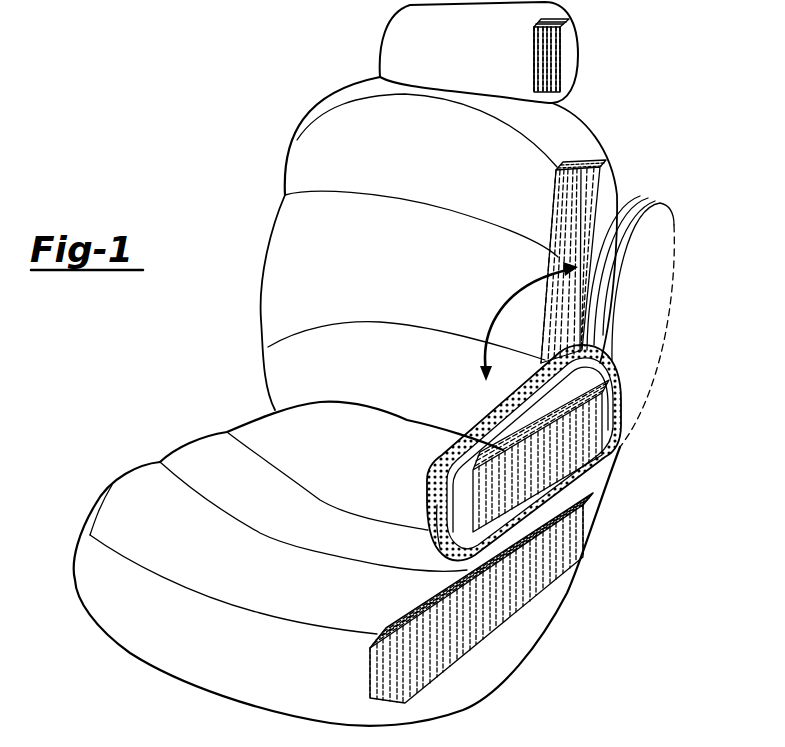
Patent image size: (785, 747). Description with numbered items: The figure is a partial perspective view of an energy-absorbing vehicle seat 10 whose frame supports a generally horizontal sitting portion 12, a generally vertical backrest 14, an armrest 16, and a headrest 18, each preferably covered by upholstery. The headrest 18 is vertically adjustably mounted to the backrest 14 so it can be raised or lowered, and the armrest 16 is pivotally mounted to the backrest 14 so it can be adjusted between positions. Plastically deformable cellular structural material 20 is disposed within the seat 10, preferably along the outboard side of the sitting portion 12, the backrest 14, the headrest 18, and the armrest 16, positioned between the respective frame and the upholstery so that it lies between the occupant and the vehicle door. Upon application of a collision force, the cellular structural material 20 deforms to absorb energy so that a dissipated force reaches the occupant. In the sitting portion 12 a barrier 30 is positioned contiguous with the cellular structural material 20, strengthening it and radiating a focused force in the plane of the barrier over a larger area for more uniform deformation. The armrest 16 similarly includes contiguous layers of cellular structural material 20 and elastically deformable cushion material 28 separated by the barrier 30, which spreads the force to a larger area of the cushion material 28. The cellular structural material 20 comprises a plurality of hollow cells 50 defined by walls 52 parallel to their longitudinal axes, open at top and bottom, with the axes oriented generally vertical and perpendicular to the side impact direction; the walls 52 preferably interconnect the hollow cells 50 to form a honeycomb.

The energy-absorbing vehicle seat 10 is at (147, 170).
The sitting portion 12 is at (151, 682).
The backrest 14 is at (252, 311).
The armrest 16 is at (684, 294).
The headrest 18 is at (370, 25).
The plastically deformable cellular structural material 20 is at (563, 42).
The elastically deformable cushion material 28 is at (497, 416).
The barrier 30 is at (455, 534).
The hollow cells 50 is at (392, 630).
The walls 52 is at (382, 678).